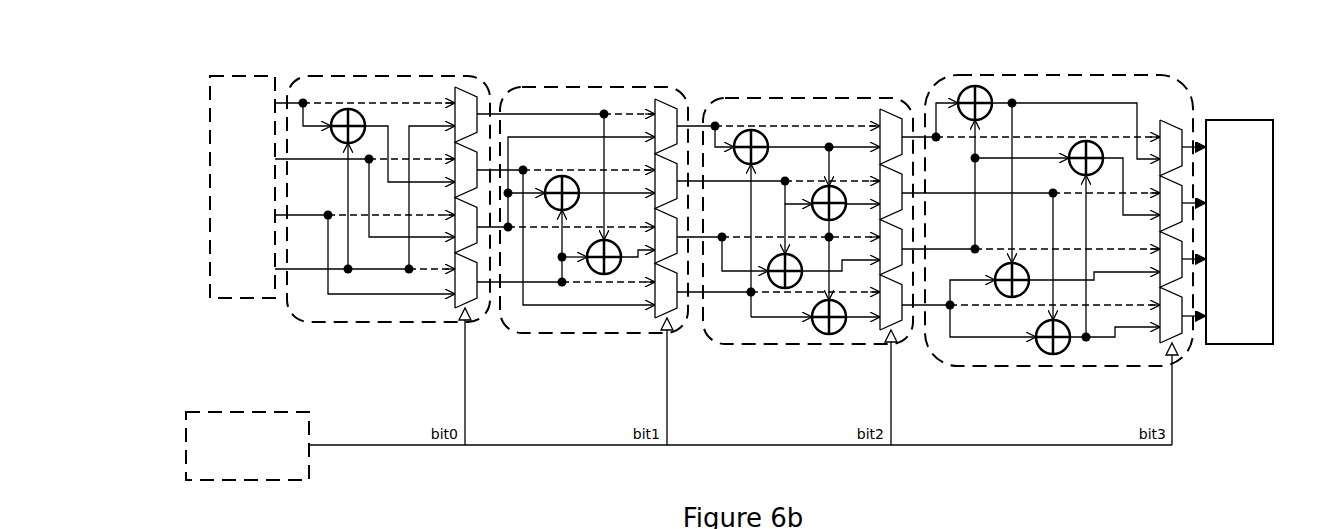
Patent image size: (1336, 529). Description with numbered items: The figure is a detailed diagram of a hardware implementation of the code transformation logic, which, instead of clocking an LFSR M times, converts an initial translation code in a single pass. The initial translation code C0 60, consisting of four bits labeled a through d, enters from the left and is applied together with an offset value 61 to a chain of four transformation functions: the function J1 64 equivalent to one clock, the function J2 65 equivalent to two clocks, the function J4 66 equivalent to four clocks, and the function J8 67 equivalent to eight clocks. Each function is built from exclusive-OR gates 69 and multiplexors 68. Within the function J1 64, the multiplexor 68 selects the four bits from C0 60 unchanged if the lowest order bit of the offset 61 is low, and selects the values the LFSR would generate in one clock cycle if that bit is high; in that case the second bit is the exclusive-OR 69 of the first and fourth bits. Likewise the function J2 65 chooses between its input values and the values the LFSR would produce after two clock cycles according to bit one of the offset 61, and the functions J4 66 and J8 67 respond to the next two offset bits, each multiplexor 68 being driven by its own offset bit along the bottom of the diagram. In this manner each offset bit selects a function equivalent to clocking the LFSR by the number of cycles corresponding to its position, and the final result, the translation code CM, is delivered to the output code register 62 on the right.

The initial translation code C0 60 is at (208, 165).
The offset value 61 is at (220, 412).
The output code register 62 is at (1248, 120).
The function J1 64 is at (387, 76).
The function J2 65 is at (590, 87).
The function J4 66 is at (782, 98).
The function J8 67 is at (1025, 76).
The multiplexor 68 is at (468, 96).
The exclusive-OR gate 69 is at (345, 108).